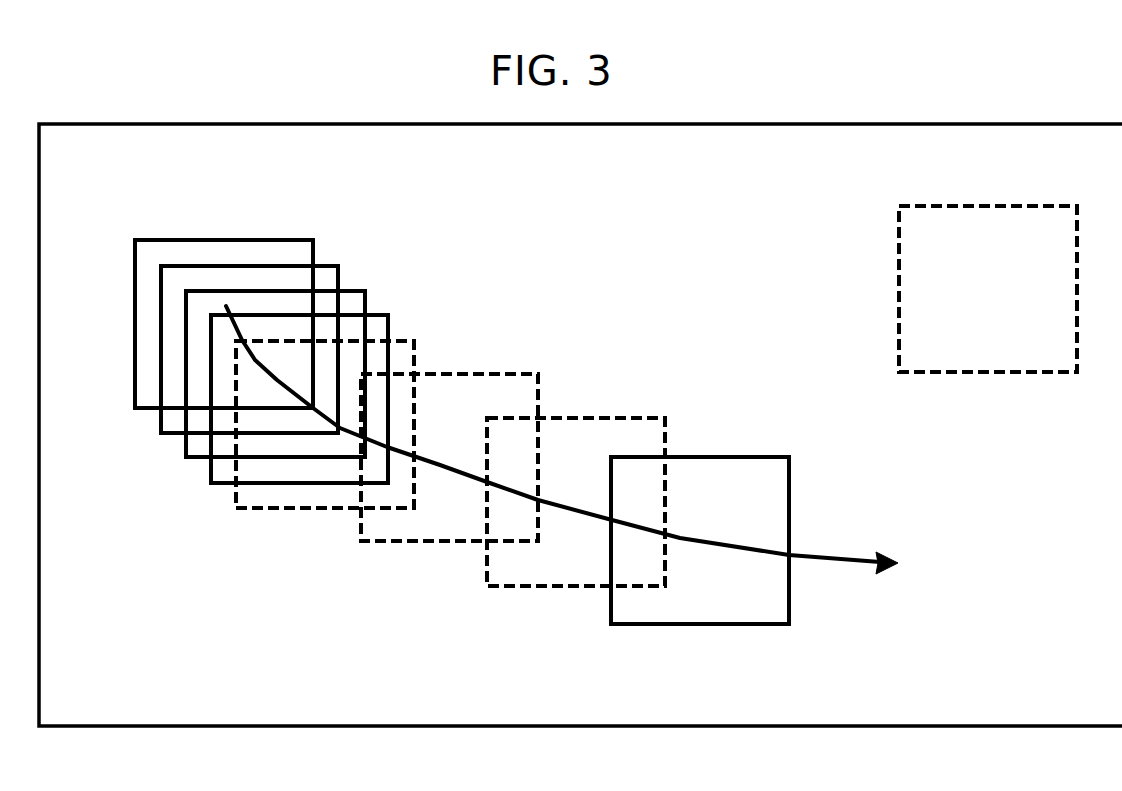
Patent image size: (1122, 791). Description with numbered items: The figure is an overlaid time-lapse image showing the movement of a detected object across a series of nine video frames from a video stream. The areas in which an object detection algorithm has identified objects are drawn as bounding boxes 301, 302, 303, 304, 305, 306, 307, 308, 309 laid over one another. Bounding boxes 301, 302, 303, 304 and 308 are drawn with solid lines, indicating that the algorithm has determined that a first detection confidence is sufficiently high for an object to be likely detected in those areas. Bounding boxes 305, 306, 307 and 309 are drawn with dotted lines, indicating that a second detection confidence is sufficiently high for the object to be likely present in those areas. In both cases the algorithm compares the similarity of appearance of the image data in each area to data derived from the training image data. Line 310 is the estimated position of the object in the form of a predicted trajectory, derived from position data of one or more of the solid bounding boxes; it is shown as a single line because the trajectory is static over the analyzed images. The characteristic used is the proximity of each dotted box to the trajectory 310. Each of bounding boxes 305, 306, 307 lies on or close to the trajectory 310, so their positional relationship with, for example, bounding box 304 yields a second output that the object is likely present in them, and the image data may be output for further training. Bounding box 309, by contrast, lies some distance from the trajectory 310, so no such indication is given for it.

The bounding box 301 is at (313, 238).
The bounding box 302 is at (338, 265).
The bounding box 303 is at (365, 291).
The bounding box 304 is at (388, 315).
The bounding box 305 is at (414, 341).
The bounding box 306 is at (538, 374).
The bounding box 307 is at (665, 419).
The bounding box 308 is at (790, 470).
The bounding box 309 is at (1030, 374).
The predicted trajectory 310 is at (840, 563).